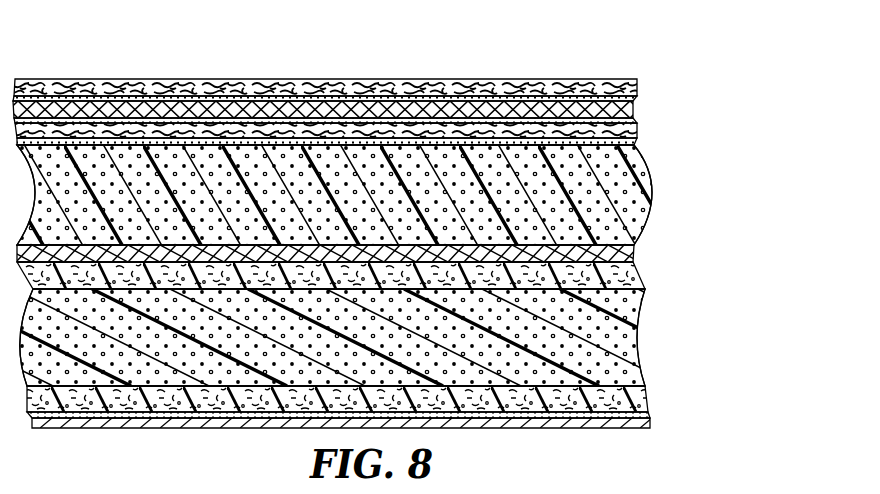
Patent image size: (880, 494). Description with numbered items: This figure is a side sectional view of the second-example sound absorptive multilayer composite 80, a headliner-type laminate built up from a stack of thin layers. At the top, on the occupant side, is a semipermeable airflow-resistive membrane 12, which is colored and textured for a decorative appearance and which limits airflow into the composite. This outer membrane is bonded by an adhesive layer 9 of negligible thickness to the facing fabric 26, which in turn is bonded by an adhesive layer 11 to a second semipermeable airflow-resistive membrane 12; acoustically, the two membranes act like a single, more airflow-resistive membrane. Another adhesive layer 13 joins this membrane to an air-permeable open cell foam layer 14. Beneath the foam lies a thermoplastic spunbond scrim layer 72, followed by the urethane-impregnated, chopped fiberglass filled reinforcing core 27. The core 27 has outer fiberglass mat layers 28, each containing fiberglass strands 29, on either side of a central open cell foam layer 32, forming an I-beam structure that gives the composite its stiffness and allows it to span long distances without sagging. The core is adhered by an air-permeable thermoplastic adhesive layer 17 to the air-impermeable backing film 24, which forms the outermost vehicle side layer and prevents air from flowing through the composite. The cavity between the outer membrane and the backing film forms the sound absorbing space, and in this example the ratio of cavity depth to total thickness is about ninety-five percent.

The sound absorptive multilayer composite 80 is at (552, 59).
The semipermeable airflow-resistive membrane 12 is at (637, 87).
The adhesive layer 9 is at (637, 100).
The facing fabric 26 is at (638, 108).
The adhesive layer 11 is at (633, 121).
The adhesive layer 13 is at (634, 146).
The foam layer 14 is at (650, 197).
The thermoplastic spunbond scrim layer 72 is at (636, 255).
The strands 29 is at (640, 269).
The fiberglass mat layers 28 is at (645, 285).
The central open cell foam layer 32 is at (640, 345).
The reinforcing core 27 is at (648, 263).
The air-permeable thermoplastic adhesive layer 17 is at (650, 417).
The air-impermeable backing film 24 is at (648, 426).